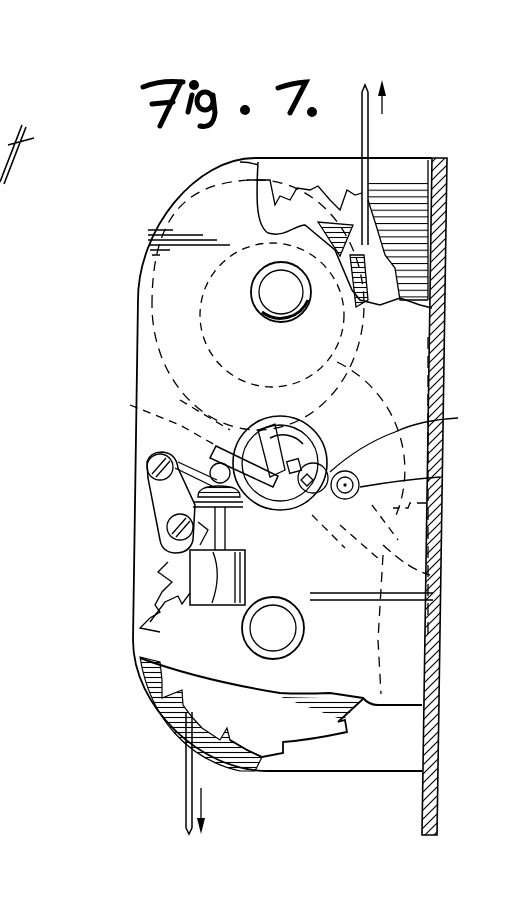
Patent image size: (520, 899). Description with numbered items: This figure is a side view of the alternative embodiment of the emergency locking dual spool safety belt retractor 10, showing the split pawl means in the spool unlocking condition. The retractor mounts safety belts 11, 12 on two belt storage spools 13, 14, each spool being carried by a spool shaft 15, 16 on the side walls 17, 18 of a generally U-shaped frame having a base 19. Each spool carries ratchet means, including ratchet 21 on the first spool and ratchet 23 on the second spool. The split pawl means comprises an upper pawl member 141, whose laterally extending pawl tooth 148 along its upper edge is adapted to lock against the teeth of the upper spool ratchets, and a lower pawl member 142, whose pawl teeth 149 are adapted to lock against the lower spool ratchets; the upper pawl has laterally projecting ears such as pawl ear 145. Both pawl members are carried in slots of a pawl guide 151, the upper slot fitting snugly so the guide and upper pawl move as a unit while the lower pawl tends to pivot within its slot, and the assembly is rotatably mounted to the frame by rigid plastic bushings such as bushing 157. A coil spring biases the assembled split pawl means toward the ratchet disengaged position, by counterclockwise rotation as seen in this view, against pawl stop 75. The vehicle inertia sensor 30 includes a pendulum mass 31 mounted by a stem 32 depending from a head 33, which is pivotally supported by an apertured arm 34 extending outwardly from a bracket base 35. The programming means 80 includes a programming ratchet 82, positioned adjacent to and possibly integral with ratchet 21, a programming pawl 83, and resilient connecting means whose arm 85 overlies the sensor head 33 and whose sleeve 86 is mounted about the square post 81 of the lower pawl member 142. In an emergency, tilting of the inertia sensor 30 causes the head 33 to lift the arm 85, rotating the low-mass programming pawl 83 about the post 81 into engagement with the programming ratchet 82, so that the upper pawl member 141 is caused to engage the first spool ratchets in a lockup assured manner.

The emergency locking dual spool safety belt retractor 10 is at (126, 266).
The safety belt 11 is at (368, 130).
The safety belt 12 is at (184, 800).
The belt storage spool 13 is at (382, 226).
The belt storage spool 14 is at (150, 700).
The spool shaft 15 is at (285, 294).
The spool shaft 16 is at (283, 635).
The side wall 17 is at (400, 745).
The side wall 18 is at (410, 650).
The base 19 is at (447, 258).
The ratchet 21 is at (262, 180).
The ratchet 23 is at (305, 730).
The vehicle inertia sensor 30 is at (146, 533).
The pendulum mass 31 is at (150, 623).
The stem 32 is at (215, 605).
The head 33 is at (148, 471).
The apertured arm 34 is at (235, 507).
The bracket base 35 is at (158, 545).
The pawl stop 75 is at (440, 477).
The programming means 80 is at (418, 568).
The post 81 is at (357, 468).
The programming ratchet 82 is at (312, 196).
The programming pawl 83 is at (182, 345).
The arm 85 is at (212, 452).
The sleeve 86 is at (445, 419).
The upper pawl member 141 is at (130, 405).
The lower pawl member 142 is at (343, 540).
The pawl ear 145 is at (246, 513).
The pawl tooth 148 is at (180, 400).
The pawl teeth 149 is at (426, 503).
The pawl guide 151 is at (315, 436).
The bushing 157 is at (296, 414).